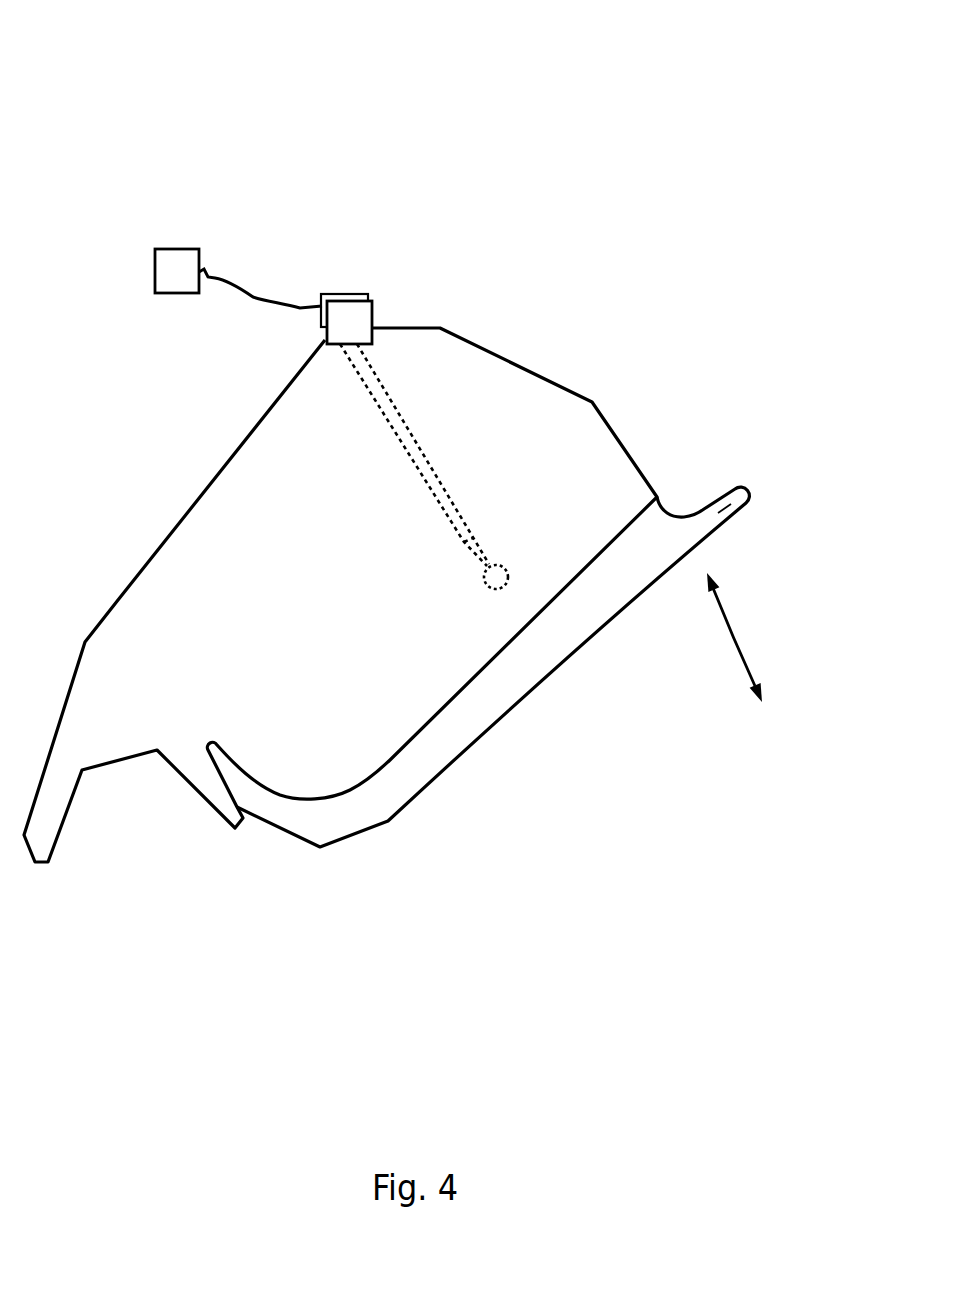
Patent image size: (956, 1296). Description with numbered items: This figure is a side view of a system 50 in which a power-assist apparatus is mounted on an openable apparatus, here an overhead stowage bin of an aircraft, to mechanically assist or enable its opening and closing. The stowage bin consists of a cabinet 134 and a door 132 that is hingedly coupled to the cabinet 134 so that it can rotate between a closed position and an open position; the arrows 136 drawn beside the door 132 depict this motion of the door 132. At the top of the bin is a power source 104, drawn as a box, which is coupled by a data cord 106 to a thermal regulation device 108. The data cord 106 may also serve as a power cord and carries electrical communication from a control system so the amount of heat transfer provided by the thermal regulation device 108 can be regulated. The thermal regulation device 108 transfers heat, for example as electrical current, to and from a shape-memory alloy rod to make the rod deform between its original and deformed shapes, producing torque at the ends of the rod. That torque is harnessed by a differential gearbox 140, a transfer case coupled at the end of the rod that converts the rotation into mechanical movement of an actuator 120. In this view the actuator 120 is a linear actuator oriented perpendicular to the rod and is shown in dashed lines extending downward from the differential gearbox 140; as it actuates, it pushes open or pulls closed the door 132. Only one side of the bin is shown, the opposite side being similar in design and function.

The system 50 is at (229, 66).
The power source 104 is at (177, 270).
The data cord 106 is at (263, 302).
The thermal regulation device 108 is at (350, 297).
The differential gearbox 140 is at (363, 325).
The actuator 120 is at (430, 463).
The cabinet 134 is at (593, 458).
The door 132 is at (737, 490).
The arrows 136 is at (738, 636).